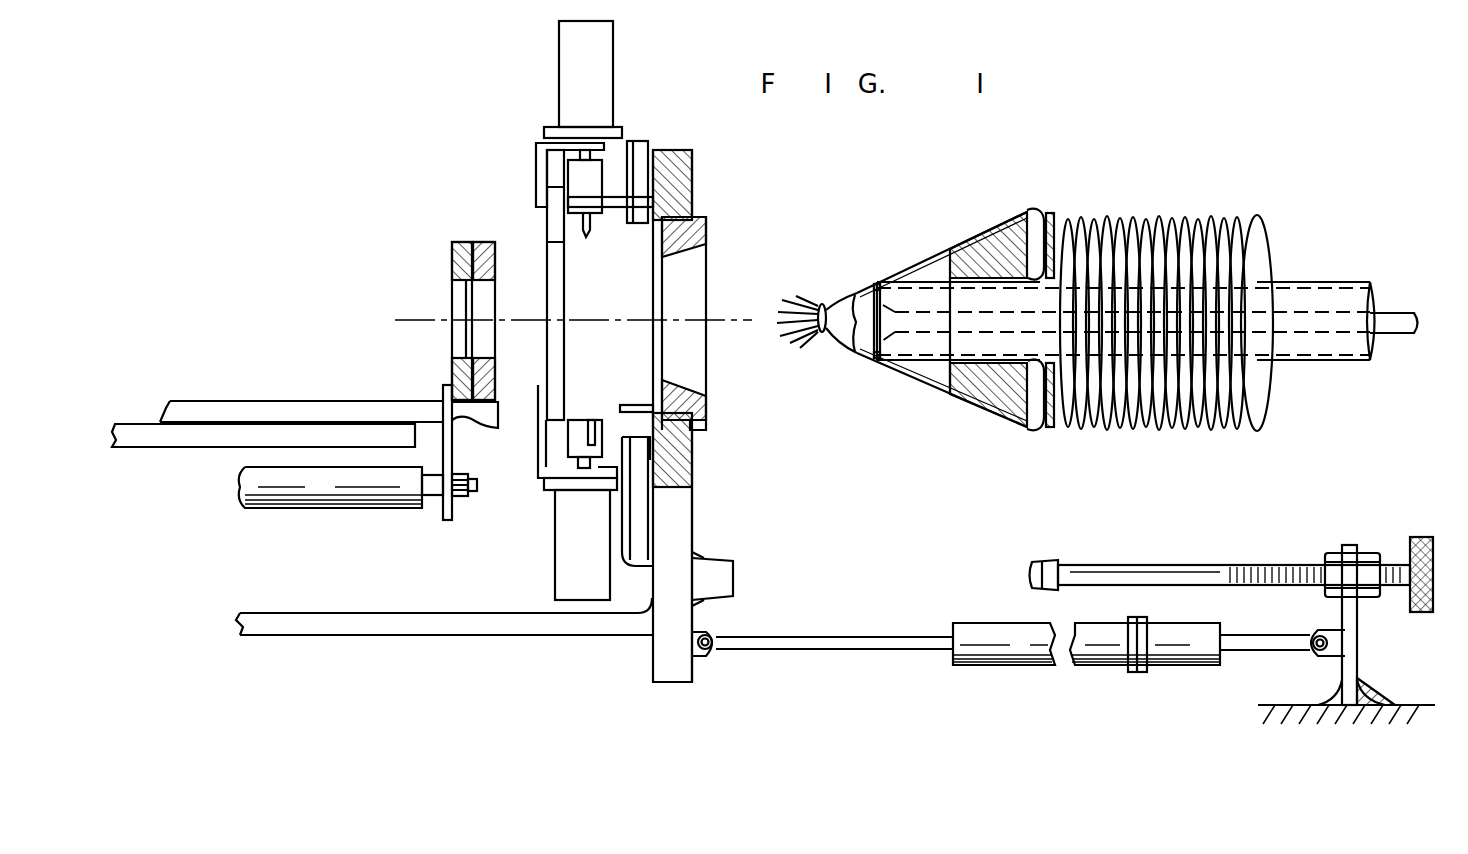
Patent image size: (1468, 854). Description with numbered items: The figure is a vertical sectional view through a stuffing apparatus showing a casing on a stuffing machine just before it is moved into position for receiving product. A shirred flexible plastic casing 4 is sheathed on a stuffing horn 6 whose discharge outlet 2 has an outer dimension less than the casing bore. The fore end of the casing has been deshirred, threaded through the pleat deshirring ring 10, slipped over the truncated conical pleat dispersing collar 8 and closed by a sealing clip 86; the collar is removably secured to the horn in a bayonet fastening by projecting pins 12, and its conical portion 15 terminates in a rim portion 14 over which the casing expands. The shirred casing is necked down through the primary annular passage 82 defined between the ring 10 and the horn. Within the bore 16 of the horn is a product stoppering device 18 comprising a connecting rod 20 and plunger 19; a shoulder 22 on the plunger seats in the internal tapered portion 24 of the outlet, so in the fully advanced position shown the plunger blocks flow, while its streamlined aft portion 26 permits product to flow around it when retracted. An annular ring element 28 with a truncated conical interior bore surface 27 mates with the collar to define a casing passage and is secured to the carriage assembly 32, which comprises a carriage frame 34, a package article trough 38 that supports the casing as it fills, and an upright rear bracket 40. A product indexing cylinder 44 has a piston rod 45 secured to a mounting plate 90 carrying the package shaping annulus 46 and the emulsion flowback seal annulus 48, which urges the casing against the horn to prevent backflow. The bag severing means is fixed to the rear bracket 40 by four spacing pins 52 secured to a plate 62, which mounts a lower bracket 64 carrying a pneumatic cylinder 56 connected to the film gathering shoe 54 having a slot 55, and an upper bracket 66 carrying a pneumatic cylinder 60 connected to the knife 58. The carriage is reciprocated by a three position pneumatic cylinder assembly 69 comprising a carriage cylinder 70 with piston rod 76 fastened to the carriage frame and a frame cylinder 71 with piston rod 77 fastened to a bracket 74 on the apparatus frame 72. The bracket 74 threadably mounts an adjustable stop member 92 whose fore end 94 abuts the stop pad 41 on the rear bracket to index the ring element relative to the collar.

The discharge outlet 2 is at (873, 348).
The casing 4 is at (1232, 216).
The stuffing horn 6 is at (1312, 283).
The pleat dispersing collar 8 is at (1000, 400).
The pleat deshirring ring 10 is at (1046, 215).
The projecting pins 12 is at (1000, 265).
The rim portion 14 is at (1022, 212).
The conical portion 15 is at (975, 247).
The bore 16 is at (935, 345).
The product stoppering device 18 is at (911, 345).
The plunger 19 is at (900, 306).
The connecting rod 20 is at (1392, 314).
The shoulder 22 is at (880, 285).
The internal tapered portion 24 is at (883, 358).
The aft portion 26 is at (920, 312).
The interior bore surface 27 is at (680, 385).
The annular ring element 28 is at (706, 220).
The carriage assembly 32 is at (370, 637).
The carriage frame 34 is at (492, 635).
The package article trough 38 is at (270, 405).
The upright rear bracket 40 is at (684, 150).
The stop pad 41 is at (733, 584).
The product indexing cylinder 44 is at (285, 500).
The piston rod 45 is at (432, 498).
The package shaping annulus 46 is at (463, 243).
The emulsion flowback seal annulus 48 is at (480, 243).
The spacing pins 52 is at (645, 404).
The film gathering shoe 54 is at (580, 420).
The slot 55 is at (598, 420).
The pneumatic cylinder 56 is at (557, 582).
The knife 58 is at (600, 224).
The pneumatic cylinder 60 is at (565, 45).
The plate 62 is at (566, 402).
The lower bracket 64 is at (545, 470).
The upper bracket 66 is at (541, 146).
The three position pneumatic cylinder assembly 69 is at (1120, 680).
The carriage cylinder 70 is at (1010, 662).
The frame cylinder 71 is at (1185, 662).
The apparatus frame 72 is at (1350, 712).
The bracket 74 is at (1358, 618).
The piston rod 76 is at (838, 650).
The piston rod 77 is at (1290, 650).
The primary annular passage 82 is at (1152, 305).
The sealing clip 86 is at (822, 302).
The mounting plate 90 is at (446, 520).
The adjustable stop member 92 is at (1211, 575).
The fore end 94 is at (1032, 568).